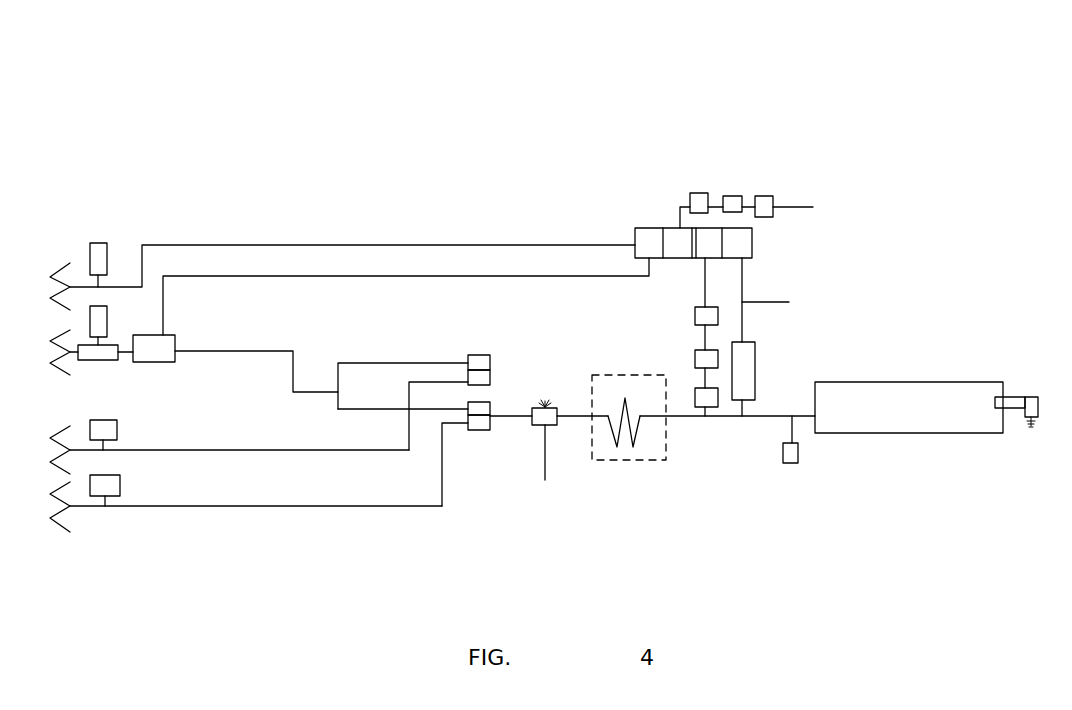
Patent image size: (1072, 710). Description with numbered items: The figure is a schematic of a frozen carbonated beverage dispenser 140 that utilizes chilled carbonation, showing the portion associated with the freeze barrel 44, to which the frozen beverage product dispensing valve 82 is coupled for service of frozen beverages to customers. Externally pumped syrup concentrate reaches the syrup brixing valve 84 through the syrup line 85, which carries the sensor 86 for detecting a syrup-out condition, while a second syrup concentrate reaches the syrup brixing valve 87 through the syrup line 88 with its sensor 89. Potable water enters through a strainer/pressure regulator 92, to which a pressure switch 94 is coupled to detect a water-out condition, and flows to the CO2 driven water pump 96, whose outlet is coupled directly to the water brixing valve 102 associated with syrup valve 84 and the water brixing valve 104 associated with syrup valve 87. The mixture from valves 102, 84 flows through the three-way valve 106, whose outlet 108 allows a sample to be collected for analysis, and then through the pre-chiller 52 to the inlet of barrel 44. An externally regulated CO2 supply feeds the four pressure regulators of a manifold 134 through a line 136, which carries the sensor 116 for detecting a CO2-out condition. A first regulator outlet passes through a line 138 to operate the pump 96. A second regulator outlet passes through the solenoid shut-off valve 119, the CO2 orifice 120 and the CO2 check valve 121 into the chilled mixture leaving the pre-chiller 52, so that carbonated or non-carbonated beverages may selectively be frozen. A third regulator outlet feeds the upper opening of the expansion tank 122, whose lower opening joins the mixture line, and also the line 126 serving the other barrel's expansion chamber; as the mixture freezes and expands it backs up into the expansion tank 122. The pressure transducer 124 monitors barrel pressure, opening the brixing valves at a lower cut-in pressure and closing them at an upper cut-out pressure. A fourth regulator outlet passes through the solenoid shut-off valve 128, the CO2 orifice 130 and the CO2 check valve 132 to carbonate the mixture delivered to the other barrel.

The FCB dispenser 140 is at (710, 74).
The freeze barrel 44 is at (915, 397).
The frozen beverage product dispensing valve 82 is at (1030, 399).
The pre-chiller 52 is at (632, 457).
The syrup brixing valve 84 is at (487, 431).
The syrup line 85 is at (243, 506).
The sensor 86 is at (120, 487).
The syrup brixing valve 87 is at (488, 378).
The syrup line 88 is at (258, 450).
The sensor 89 is at (117, 431).
The strainer/pressure regulator 92 is at (97, 361).
The pressure switch 94 is at (100, 326).
The CO2 driven water pump 96 is at (165, 354).
The water brixing valve 102 is at (488, 408).
The water brixing valve 104 is at (481, 362).
The 3-way valve 106 is at (557, 426).
The outlet 108 is at (545, 463).
The sensor 116 is at (98, 256).
The solenoid shut-off valve 119 is at (703, 318).
The CO2 orifice 120 is at (705, 360).
The CO2 check valve 121 is at (715, 405).
The expansion tank 122 is at (750, 368).
The pressure transducer 124 is at (797, 453).
The line 126 is at (789, 302).
The solenoid shut-off valve 128 is at (697, 205).
The CO2 orifice 130 is at (733, 203).
The CO2 check valve 132 is at (767, 205).
The manifold 134 is at (653, 238).
The line 136 is at (395, 245).
The line 138 is at (413, 276).